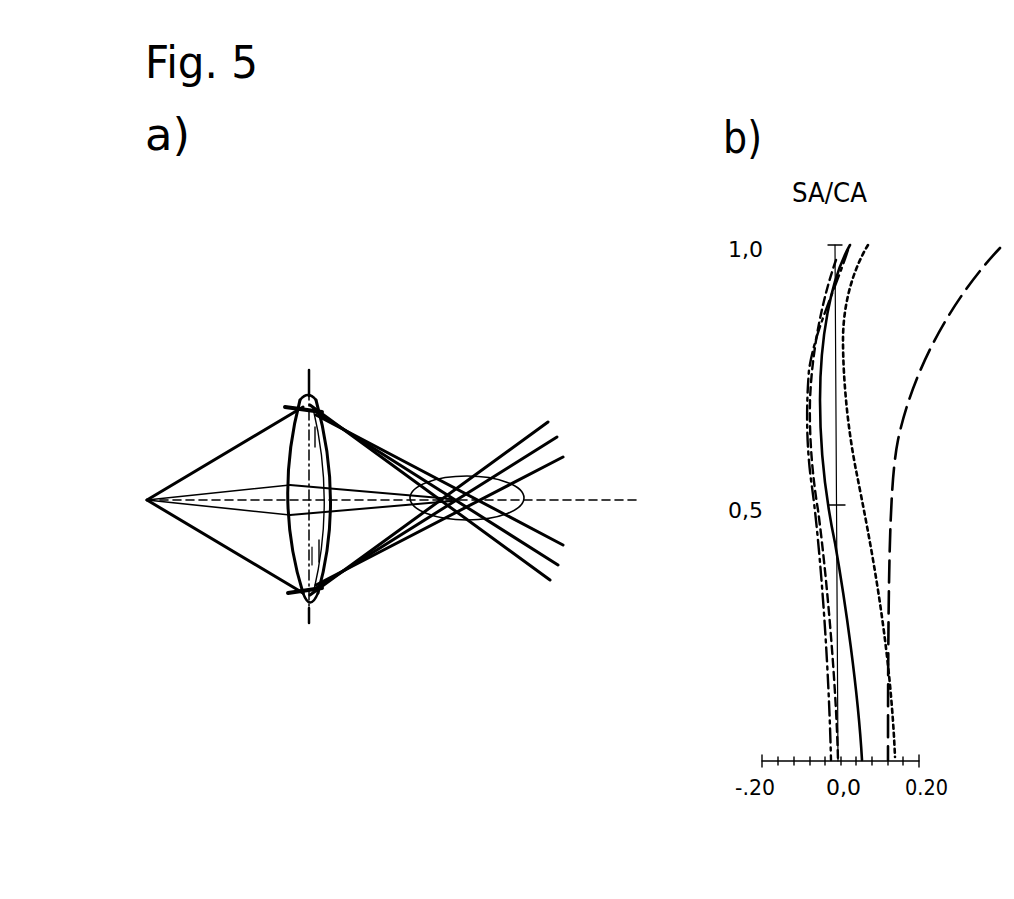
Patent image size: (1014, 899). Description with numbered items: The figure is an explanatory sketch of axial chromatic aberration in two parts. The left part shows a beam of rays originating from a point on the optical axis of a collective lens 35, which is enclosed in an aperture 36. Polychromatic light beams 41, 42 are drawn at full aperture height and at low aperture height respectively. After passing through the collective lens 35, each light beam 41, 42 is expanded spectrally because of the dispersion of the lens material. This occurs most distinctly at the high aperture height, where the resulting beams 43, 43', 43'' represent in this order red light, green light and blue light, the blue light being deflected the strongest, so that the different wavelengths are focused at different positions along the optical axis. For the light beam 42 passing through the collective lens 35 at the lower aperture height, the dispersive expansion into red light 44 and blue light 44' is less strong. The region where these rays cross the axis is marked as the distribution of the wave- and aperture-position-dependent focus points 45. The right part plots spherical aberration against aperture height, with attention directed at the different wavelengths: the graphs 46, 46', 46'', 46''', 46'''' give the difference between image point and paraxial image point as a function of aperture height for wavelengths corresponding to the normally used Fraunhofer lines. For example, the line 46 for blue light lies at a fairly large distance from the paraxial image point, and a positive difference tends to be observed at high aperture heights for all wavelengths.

The collective lens 35 is at (323, 582).
The aperture 36 is at (312, 380).
The polychromatic light beam 41 is at (212, 460).
The polychromatic light beam 42 is at (247, 490).
The red light 43 is at (430, 480).
The green light 43' is at (435, 486).
The blue light 43'' is at (439, 496).
The red light 44 is at (371, 547).
The blue light 44' is at (371, 563).
The distribution of the wave- and aperture-position-dependent focus points 45 is at (462, 520).
The graph of the aberration for a wavelength 46 is at (944, 504).
The graph of the aberration for a wavelength 46' is at (916, 501).
The graph of the aberration for a wavelength 46'' is at (906, 502).
The graph of the aberration for a wavelength 46''' is at (796, 505).
The graph of the aberration for a wavelength 46'''' is at (788, 510).